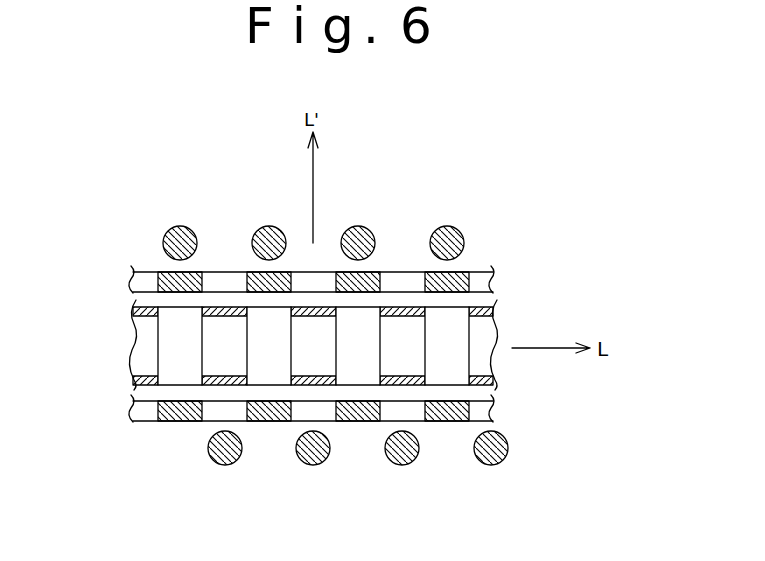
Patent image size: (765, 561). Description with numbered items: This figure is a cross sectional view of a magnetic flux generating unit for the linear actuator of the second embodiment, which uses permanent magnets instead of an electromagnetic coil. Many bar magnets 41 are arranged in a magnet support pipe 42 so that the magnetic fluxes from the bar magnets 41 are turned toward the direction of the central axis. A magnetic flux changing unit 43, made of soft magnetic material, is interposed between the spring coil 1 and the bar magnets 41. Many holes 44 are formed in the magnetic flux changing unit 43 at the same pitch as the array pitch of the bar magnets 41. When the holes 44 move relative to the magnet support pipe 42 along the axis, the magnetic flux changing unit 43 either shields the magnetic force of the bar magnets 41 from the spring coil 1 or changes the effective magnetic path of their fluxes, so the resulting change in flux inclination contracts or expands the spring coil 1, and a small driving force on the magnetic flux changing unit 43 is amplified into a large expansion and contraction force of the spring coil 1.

The spring coil 1 is at (168, 229).
The bar magnet 41 is at (182, 347).
The magnet support pipe 42 is at (142, 308).
The magnetic flux changing unit 43 is at (140, 277).
The holes 44 is at (226, 283).